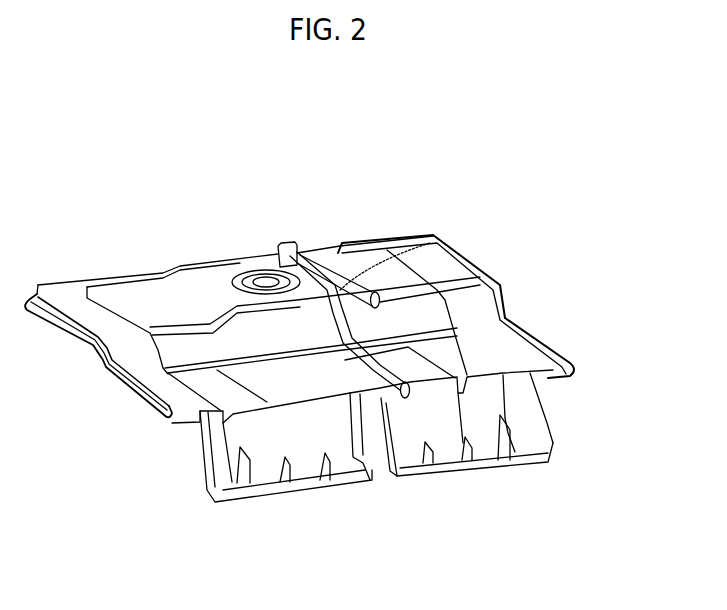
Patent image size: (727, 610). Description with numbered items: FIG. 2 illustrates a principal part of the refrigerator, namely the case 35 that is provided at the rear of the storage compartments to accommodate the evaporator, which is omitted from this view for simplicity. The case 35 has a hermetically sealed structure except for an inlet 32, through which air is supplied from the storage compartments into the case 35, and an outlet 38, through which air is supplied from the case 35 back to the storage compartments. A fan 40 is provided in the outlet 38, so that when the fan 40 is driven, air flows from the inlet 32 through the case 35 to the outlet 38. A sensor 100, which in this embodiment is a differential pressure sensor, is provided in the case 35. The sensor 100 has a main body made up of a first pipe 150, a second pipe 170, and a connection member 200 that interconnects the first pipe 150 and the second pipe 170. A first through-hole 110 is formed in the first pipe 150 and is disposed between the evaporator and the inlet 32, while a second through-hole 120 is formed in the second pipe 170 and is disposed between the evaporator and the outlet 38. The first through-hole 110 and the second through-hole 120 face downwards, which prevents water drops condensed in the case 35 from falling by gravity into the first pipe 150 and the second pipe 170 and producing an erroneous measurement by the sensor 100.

The inlet 32 is at (450, 470).
The case 35 is at (157, 425).
The outlet 38 is at (242, 268).
The fan 40 is at (268, 258).
The sensor 100 is at (643, 180).
The first through-hole 110 is at (570, 372).
The second through-hole 120 is at (480, 285).
The first pipe 150 is at (510, 353).
The second pipe 170 is at (497, 252).
The connection member 200 is at (298, 247).